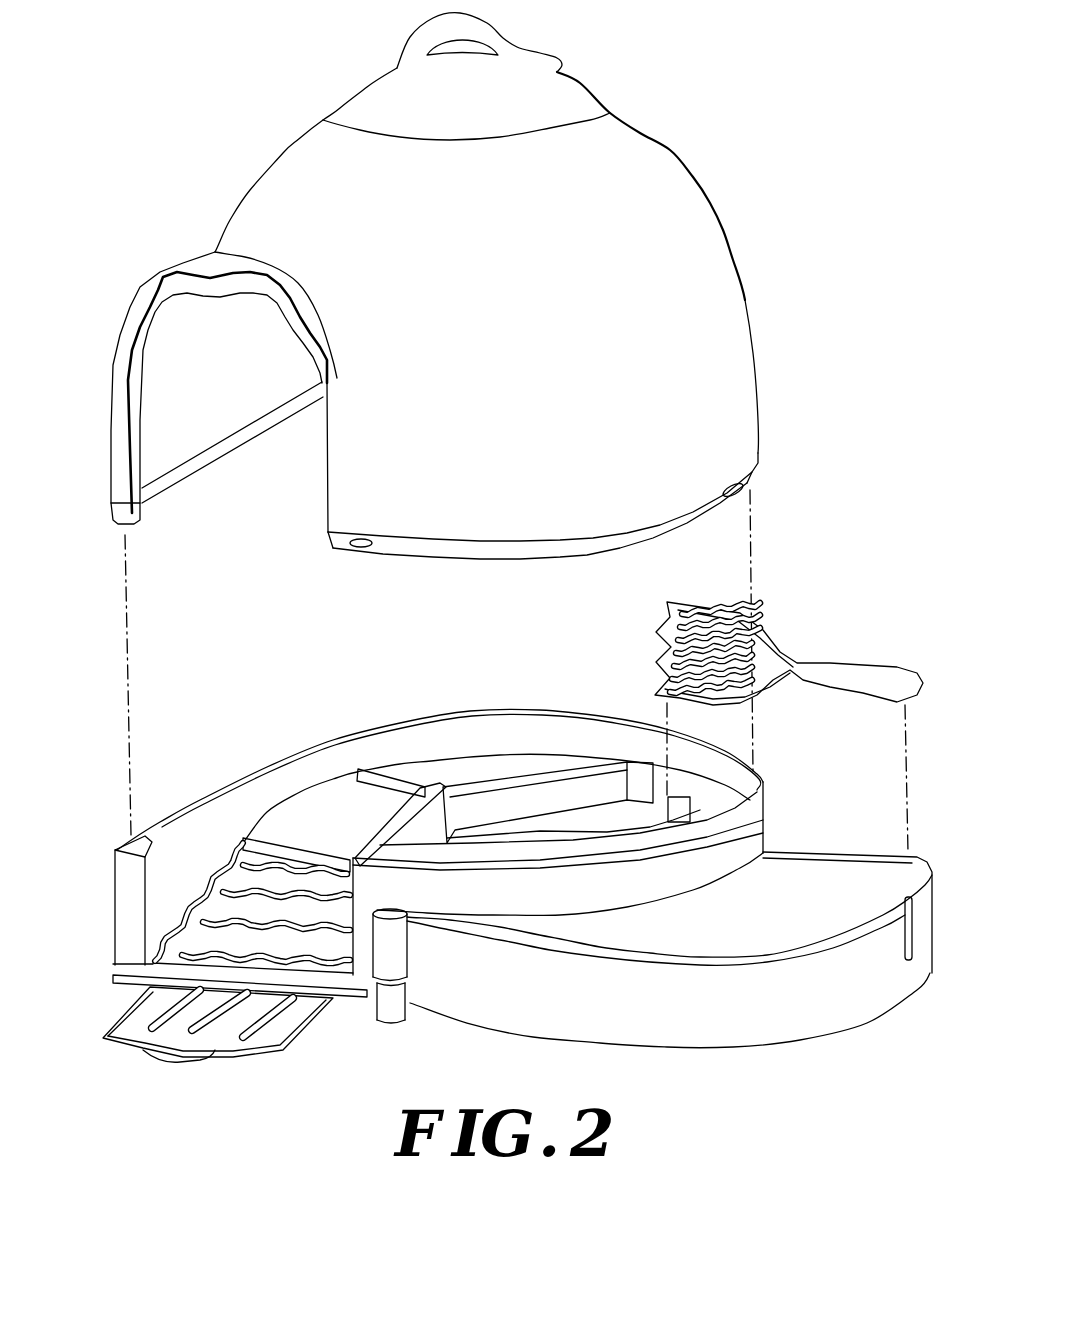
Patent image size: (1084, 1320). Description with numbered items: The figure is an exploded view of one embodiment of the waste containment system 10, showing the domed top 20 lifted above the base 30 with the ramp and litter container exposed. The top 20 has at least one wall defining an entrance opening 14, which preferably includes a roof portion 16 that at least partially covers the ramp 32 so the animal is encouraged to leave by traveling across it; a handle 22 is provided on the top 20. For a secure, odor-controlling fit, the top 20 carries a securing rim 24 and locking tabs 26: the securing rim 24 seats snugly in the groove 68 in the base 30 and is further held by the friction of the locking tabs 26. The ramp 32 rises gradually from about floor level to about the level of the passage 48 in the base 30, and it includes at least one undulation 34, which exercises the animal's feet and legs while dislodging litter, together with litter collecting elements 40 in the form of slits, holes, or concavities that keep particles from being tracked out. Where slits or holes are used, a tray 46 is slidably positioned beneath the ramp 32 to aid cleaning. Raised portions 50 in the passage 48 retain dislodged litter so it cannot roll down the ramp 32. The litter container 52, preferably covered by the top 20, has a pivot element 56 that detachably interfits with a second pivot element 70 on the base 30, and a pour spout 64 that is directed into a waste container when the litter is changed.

The waste containment system 10 is at (770, 290).
The entrance opening 14 is at (167, 328).
The roof portion 16 is at (212, 260).
The top 20 is at (673, 150).
The handle 22 is at (500, 36).
The securing rim 24 is at (748, 484).
The locking tabs 26 is at (360, 548).
The base 30 is at (773, 802).
The ramp 32 is at (325, 988).
The undulation 34 is at (207, 900).
The litter collecting elements 40 is at (298, 863).
The tray 46 is at (277, 1033).
The passage 48 is at (487, 773).
The raised portions 50 is at (398, 778).
The litter container 52 is at (785, 930).
The pivot element 56 is at (393, 957).
The pour spout 64 is at (908, 865).
The groove 68 is at (755, 777).
The second pivot element 70 is at (397, 1012).